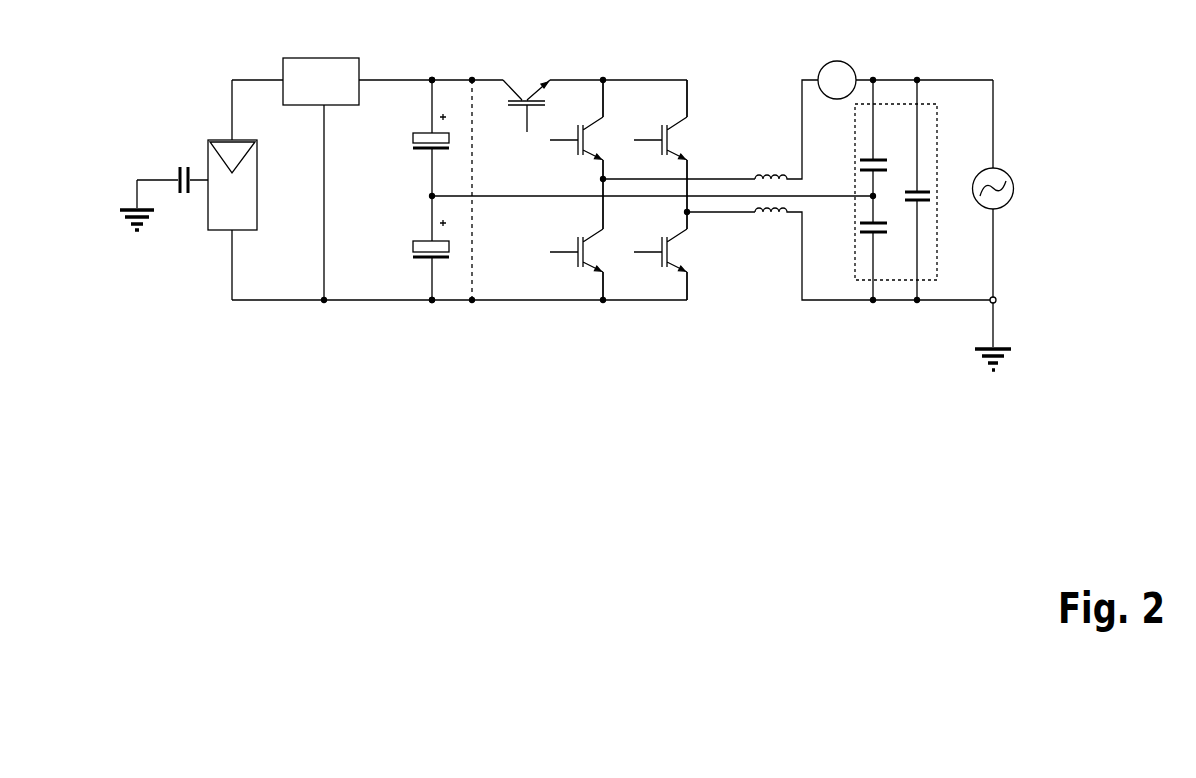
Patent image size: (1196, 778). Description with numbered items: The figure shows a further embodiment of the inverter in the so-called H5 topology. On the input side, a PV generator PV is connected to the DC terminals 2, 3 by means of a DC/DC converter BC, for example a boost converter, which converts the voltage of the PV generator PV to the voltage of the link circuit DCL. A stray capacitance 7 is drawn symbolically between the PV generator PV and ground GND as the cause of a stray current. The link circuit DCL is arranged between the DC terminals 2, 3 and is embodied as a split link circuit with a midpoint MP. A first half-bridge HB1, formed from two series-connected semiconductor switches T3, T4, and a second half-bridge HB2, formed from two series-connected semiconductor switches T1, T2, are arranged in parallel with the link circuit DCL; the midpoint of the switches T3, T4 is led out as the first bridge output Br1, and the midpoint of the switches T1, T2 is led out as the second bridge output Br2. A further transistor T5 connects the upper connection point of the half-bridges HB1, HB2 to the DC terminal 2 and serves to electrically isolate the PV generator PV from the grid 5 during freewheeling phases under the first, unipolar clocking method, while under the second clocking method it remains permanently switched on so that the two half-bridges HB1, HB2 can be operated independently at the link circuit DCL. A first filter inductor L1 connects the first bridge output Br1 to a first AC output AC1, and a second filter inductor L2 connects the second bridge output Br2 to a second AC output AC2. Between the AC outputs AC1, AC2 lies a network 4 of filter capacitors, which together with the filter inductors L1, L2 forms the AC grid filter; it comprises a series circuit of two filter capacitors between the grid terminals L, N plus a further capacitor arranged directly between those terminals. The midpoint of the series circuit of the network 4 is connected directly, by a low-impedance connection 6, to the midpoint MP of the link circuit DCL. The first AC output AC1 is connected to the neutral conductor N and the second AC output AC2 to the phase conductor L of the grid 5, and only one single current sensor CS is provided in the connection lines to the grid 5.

The DC/DC converter BC is at (331, 53).
The PV generator PV is at (204, 230).
The stray capacitance 7 is at (172, 169).
The ground GND is at (121, 228).
The link circuit DCL is at (396, 190).
The DC terminal 2 is at (434, 78).
The DC terminal 3 is at (434, 303).
The midpoint MP is at (436, 194).
The low-impedance connection 6 is at (515, 193).
The transistor T5 is at (521, 86).
The second half-bridge HB2 is at (609, 70).
The first half-bridge HB1 is at (693, 89).
The semiconductor switch T1 is at (573, 127).
The semiconductor switch T2 is at (573, 240).
The semiconductor switch T3 is at (657, 127).
The semiconductor switch T4 is at (657, 240).
The second bridge output Br2 is at (600, 179).
The first bridge output Br1 is at (702, 218).
The second filter inductor L2 is at (766, 172).
The first filter inductor L1 is at (765, 220).
The current sensor CS is at (822, 66).
The second AC output AC2 is at (875, 77).
The first AC output AC1 is at (881, 305).
The network 4 is at (944, 143).
The grid 5 is at (1019, 185).
The phase conductor L is at (1002, 88).
The neutral conductor N is at (999, 296).